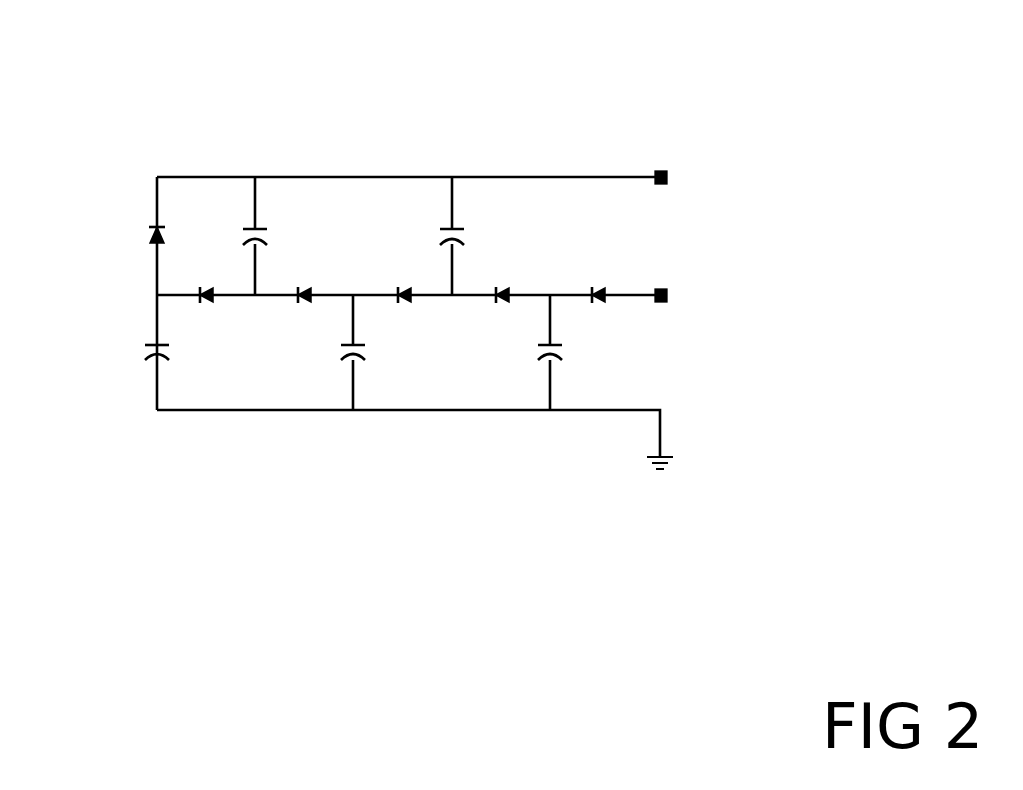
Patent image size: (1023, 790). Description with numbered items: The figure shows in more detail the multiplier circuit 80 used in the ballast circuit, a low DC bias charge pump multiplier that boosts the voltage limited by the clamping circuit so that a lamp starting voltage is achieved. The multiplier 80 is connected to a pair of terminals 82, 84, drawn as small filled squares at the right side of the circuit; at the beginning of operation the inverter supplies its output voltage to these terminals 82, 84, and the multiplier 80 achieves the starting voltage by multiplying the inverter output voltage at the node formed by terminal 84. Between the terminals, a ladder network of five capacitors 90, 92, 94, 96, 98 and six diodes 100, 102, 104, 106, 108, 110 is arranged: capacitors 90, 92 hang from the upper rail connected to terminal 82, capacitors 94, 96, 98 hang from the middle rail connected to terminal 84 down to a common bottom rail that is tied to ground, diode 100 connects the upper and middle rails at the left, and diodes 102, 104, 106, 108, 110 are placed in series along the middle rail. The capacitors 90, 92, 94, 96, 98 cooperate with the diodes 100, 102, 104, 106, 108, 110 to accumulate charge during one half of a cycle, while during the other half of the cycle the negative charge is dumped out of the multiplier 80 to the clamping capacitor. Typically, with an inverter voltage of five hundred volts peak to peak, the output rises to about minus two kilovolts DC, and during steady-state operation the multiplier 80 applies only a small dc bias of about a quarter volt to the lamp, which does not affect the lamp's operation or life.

The multiplier circuit 80 is at (255, 113).
The terminal 82 is at (663, 172).
The terminal 84 is at (668, 289).
The capacitor 90 is at (262, 231).
The capacitor 92 is at (459, 230).
The capacitor 94 is at (164, 345).
The capacitor 96 is at (359, 345).
The capacitor 98 is at (554, 345).
The diode 100 is at (160, 230).
The diode 102 is at (205, 288).
The diode 104 is at (307, 289).
The diode 106 is at (404, 289).
The diode 108 is at (505, 289).
The diode 110 is at (599, 288).